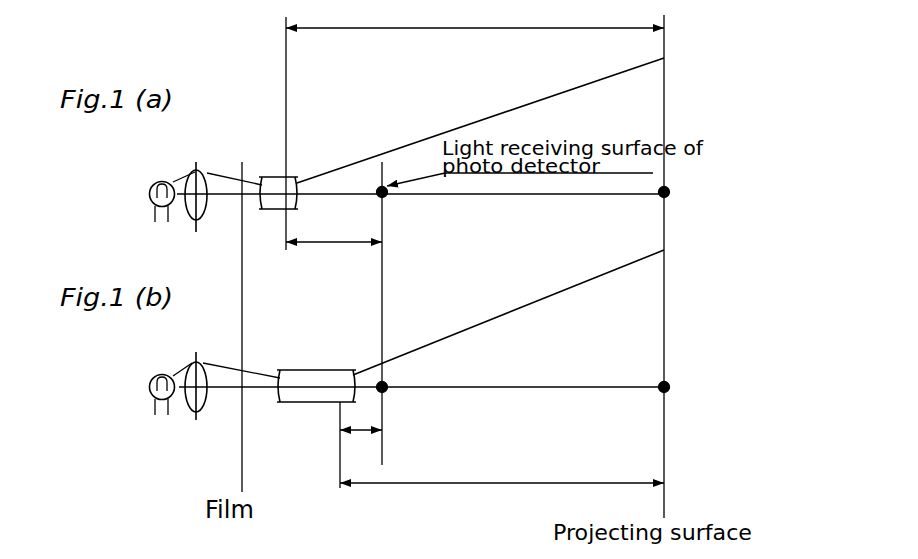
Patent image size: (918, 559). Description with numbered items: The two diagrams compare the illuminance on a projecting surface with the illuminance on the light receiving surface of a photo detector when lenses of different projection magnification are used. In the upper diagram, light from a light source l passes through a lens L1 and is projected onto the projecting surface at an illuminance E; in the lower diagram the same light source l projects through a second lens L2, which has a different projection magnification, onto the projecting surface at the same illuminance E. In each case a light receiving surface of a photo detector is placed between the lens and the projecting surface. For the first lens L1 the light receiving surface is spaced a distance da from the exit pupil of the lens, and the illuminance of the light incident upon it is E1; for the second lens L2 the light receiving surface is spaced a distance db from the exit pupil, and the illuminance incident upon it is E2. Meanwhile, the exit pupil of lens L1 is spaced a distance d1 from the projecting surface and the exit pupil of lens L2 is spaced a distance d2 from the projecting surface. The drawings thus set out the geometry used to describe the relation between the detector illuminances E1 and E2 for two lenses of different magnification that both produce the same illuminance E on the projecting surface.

In FIG. 1A, the light source l is at (157, 181).
In FIG. 1B, the light source l is at (153, 376).
In FIG. 1A, the lens L1 is at (272, 175).
In FIG. 1B, the lens L2 is at (308, 366).
In FIG. 1A, the illuminance E1 is at (400, 221).
In FIG. 1B, the illuminance E2 is at (400, 372).
In FIG. 1A, the illuminance E is at (679, 196).
In FIG. 1B, the illuminance E is at (679, 390).
In FIG. 1A, the distance d1 is at (475, 133).
In FIG. 1B, the distance d2 is at (502, 467).
In FIG. 1A, the distance da is at (334, 226).
In FIG. 1B, the distance db is at (361, 445).